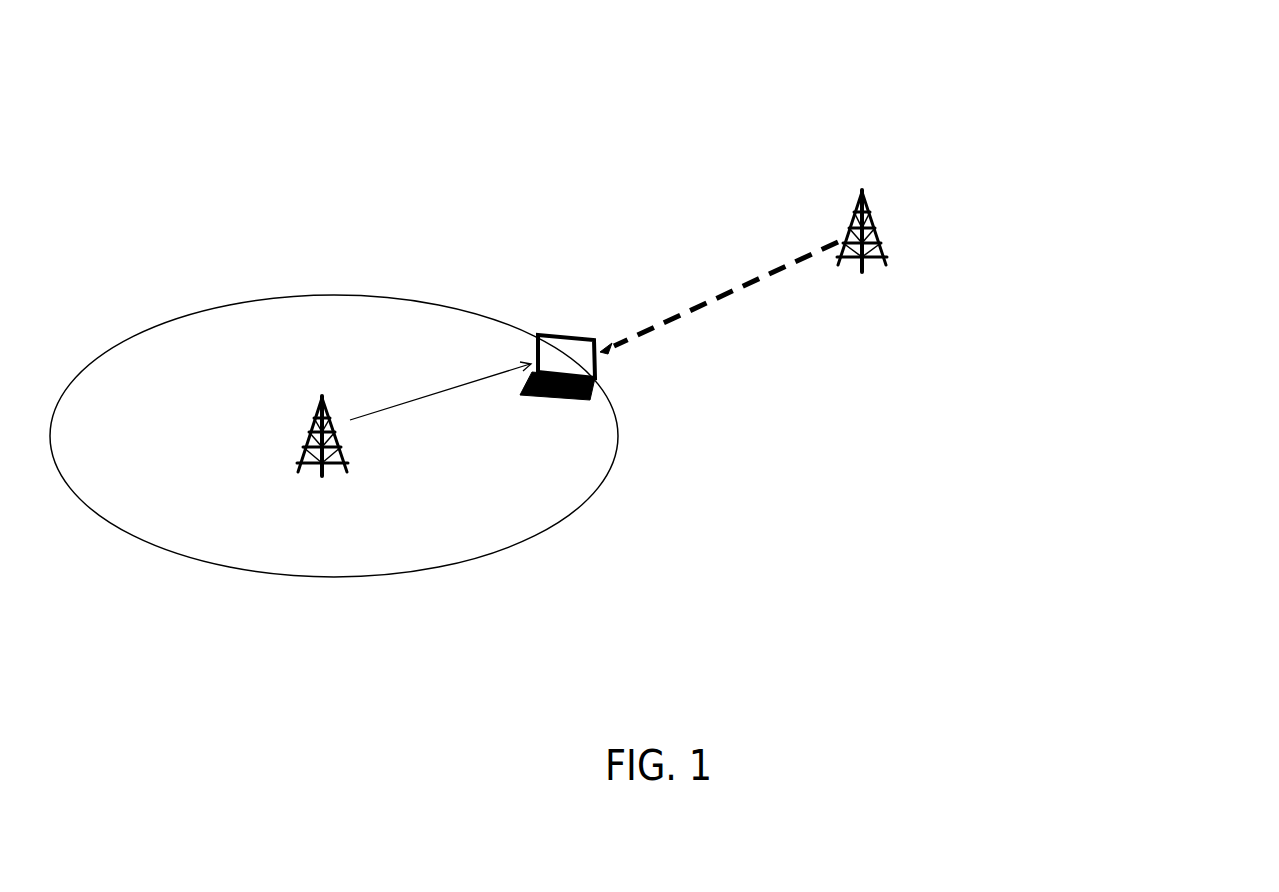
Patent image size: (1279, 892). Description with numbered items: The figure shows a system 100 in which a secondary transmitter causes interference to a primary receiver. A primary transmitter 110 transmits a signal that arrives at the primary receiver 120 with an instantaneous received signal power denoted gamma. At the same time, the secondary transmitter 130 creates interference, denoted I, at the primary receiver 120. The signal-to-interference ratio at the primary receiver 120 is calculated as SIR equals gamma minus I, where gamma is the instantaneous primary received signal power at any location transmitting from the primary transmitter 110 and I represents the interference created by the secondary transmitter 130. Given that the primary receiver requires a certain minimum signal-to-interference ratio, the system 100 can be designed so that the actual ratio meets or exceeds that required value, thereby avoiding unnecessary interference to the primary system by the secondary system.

The system 100 is at (261, 124).
The primary transmitter 110 is at (244, 434).
The primary receiver 120 is at (575, 222).
The secondary transmitter 130 is at (946, 106).